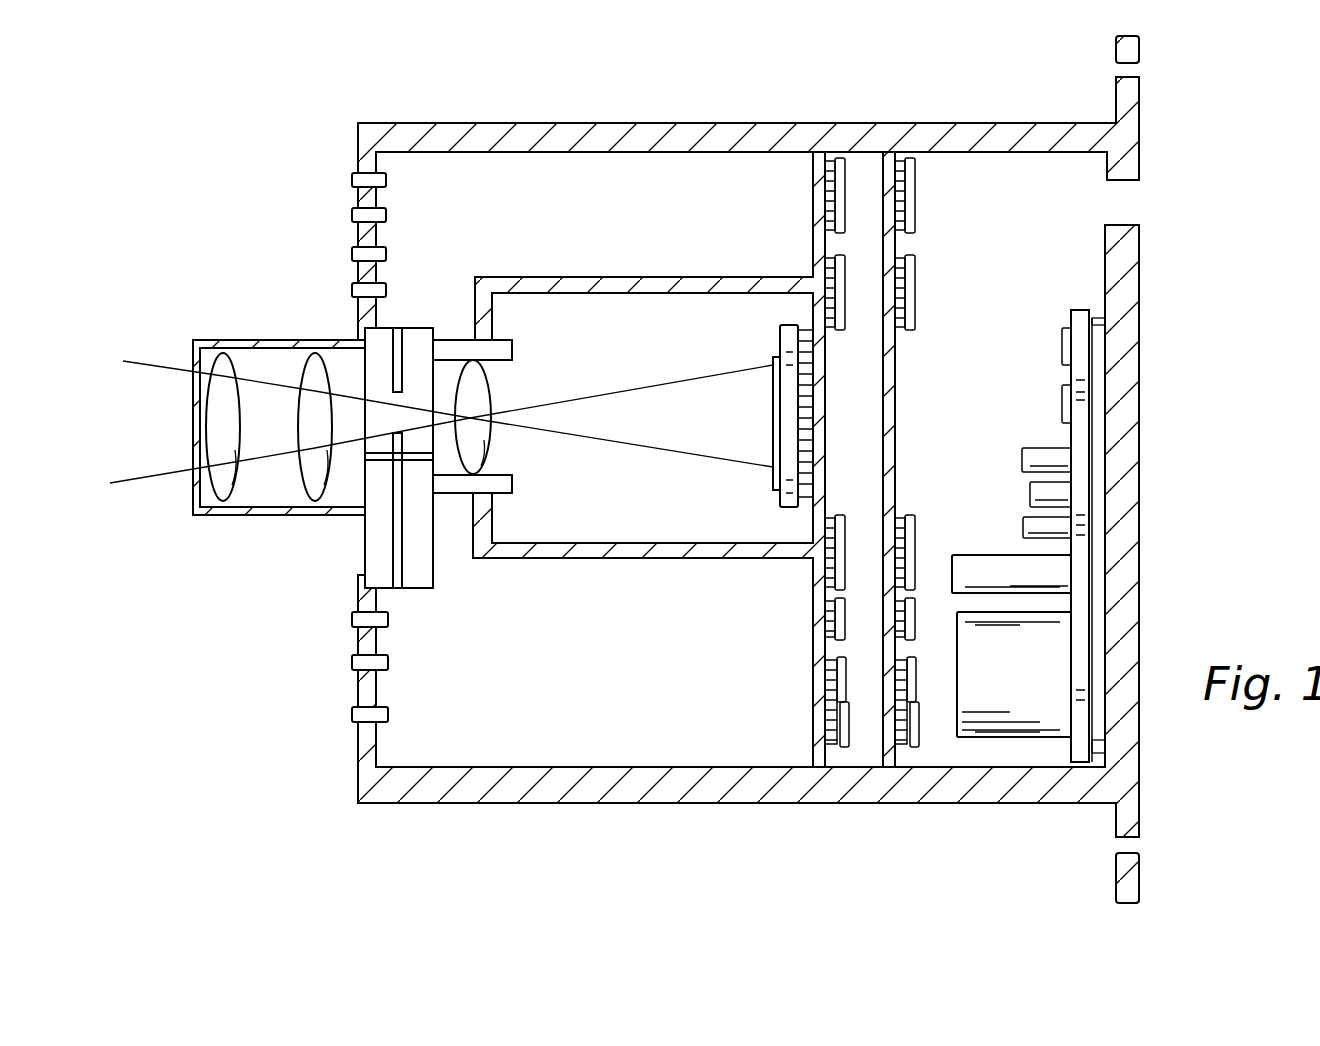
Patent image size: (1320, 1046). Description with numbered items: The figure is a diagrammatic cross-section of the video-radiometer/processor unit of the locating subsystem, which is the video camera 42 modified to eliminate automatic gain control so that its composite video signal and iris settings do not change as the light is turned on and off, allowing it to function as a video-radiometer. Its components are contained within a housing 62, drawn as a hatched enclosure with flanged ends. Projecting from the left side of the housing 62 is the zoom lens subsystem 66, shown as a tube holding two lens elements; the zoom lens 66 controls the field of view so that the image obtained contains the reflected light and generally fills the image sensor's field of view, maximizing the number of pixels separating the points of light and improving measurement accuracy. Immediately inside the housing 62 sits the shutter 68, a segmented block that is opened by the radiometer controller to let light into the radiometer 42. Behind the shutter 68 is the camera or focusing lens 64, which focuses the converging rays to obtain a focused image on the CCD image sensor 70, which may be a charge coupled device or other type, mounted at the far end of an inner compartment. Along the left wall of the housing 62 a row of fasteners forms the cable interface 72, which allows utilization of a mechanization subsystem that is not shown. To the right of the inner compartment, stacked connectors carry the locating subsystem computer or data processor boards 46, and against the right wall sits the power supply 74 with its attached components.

The video camera 42 is at (503, 123).
The housing 62 is at (740, 122).
The data processor boards 46 is at (837, 243).
The focusing lens 64 is at (492, 444).
The zoom lens subsystem 66 is at (262, 523).
The shutter 68 is at (417, 330).
The CCD image sensor 70 is at (780, 346).
The cable interface 72 is at (349, 618).
The power supply 74 is at (1069, 441).